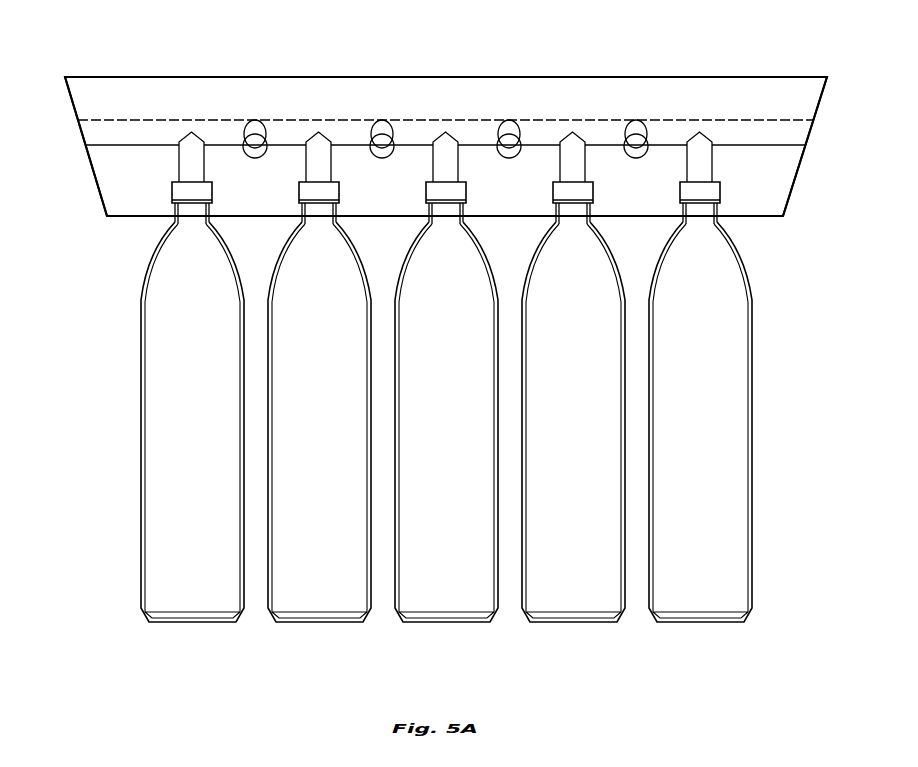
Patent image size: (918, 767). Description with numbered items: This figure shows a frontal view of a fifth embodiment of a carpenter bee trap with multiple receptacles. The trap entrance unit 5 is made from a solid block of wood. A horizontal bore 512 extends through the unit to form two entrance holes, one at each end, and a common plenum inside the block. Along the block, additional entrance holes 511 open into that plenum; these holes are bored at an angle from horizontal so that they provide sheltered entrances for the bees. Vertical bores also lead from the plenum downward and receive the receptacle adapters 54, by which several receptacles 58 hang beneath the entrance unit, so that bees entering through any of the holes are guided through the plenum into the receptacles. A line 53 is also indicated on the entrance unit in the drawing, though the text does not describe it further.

The trap entrance unit 5 is at (180, 77).
The entrance holes 511 is at (259, 144).
The horizontal bore 512 is at (80, 130).
The liquid channel 53 is at (340, 128).
The receptacle adapters 54 is at (210, 210).
The bottle 58 is at (750, 283).